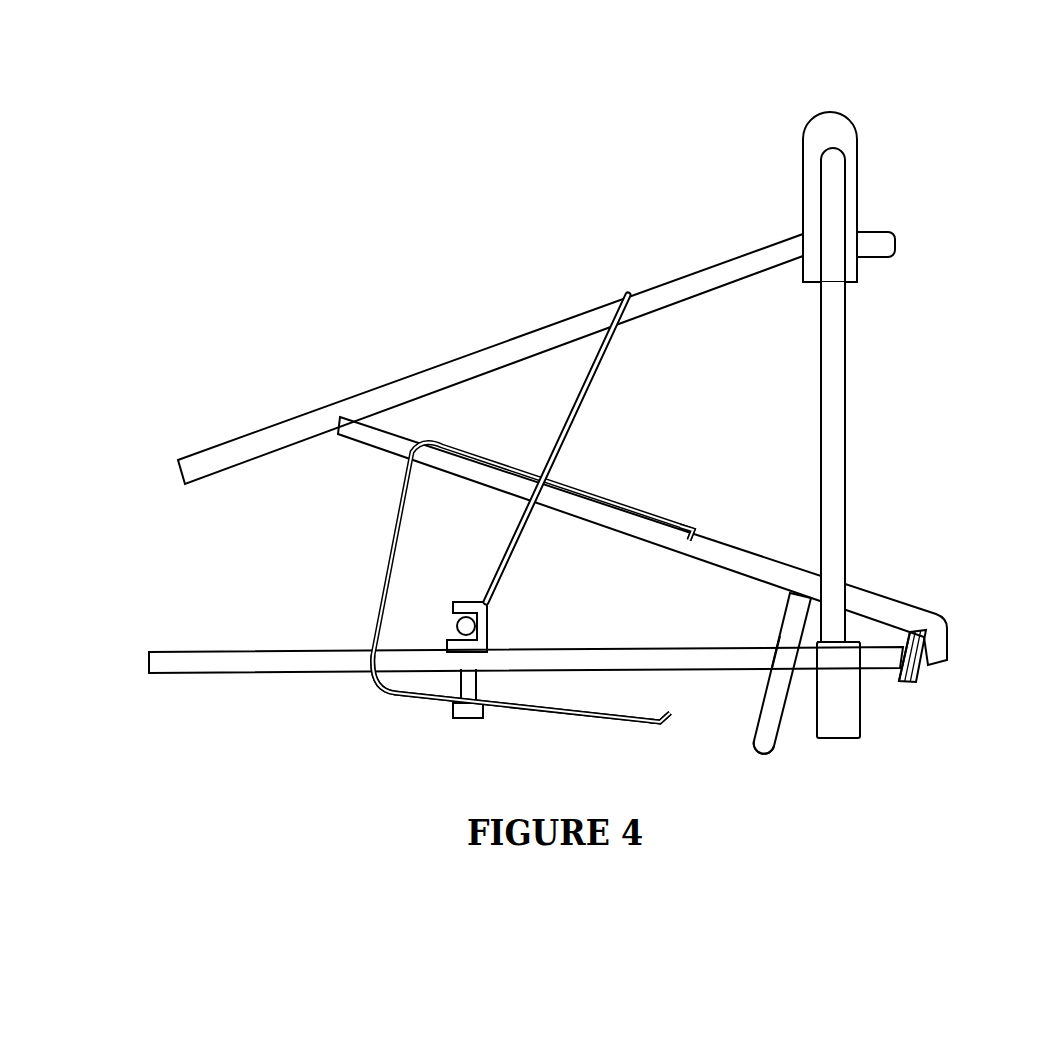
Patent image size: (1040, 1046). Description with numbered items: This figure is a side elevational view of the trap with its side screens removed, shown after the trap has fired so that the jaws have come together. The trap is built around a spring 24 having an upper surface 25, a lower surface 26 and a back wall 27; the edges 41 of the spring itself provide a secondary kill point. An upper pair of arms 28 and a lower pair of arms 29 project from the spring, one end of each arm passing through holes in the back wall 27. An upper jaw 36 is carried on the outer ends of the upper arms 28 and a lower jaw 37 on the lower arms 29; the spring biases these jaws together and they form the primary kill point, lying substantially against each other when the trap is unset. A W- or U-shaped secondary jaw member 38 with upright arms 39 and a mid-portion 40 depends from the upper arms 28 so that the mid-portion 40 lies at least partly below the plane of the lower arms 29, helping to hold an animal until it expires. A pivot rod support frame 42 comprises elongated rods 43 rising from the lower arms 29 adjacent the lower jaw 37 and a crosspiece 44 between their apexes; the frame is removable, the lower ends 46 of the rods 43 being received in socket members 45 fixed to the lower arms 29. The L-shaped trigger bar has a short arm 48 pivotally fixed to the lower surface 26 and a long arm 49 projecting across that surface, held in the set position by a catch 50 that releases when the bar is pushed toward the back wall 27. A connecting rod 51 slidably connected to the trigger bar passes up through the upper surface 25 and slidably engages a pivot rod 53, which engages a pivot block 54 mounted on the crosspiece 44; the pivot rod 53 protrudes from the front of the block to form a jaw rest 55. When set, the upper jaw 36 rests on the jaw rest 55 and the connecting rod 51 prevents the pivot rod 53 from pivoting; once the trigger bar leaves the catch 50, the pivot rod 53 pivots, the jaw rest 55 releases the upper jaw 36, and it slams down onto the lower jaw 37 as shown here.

The spring 24 is at (367, 530).
The upper surface 25 is at (453, 442).
The lower surface 26 is at (422, 695).
The back wall 27 is at (380, 576).
The upper pair of arms 28 is at (960, 648).
The lower pair of arms 29 is at (885, 685).
The upper jaw 36 is at (925, 652).
The lower jaw 37 is at (918, 672).
The secondary jaw member 38 is at (777, 760).
The upright arms 39 is at (778, 680).
The mid-portion 40 is at (762, 747).
The edges 41 is at (693, 532).
The pivot rod support frame 42 is at (868, 456).
The elongated rods 43 is at (840, 450).
The crosspiece 44 is at (830, 163).
The socket members 45 is at (840, 723).
The lower ends 46 is at (833, 635).
The short arm 48 is at (473, 675).
The long arm 49 is at (457, 627).
The catch 50 is at (480, 642).
The connecting rod 51 is at (593, 357).
The pivot rod 53 is at (508, 352).
The pivot block 54 is at (842, 127).
The jaw rest 55 is at (887, 242).